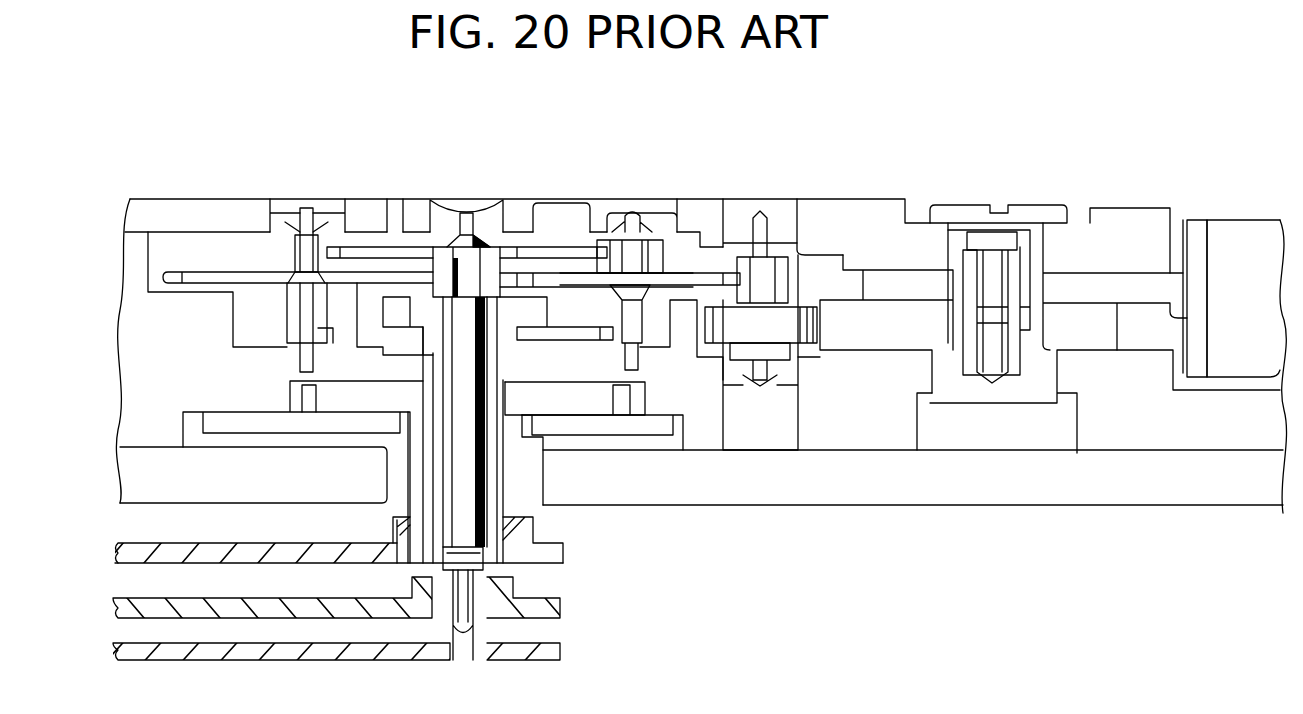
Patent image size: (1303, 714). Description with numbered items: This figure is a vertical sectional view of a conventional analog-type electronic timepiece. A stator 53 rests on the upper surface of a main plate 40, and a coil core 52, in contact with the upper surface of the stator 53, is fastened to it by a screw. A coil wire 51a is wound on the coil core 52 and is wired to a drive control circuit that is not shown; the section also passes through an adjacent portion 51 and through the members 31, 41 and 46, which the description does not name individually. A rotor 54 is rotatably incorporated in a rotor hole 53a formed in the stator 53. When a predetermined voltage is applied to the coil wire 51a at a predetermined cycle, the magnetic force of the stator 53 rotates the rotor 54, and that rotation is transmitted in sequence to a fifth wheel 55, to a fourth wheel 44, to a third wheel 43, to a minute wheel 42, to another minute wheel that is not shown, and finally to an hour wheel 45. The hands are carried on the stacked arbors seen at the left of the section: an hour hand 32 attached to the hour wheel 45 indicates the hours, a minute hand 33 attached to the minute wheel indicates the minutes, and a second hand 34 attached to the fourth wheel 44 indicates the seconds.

The base plate 31 is at (1124, 490).
The hour hand 32 is at (117, 552).
The minute hand 33 is at (117, 605).
The second hand 34 is at (115, 655).
The main plate 40 is at (893, 438).
The top plate 41 is at (240, 210).
The minute wheel 42 is at (350, 323).
The third wheel 43 is at (370, 277).
The fourth wheel 44 is at (510, 252).
The hour wheel 45 is at (597, 403).
The shield plate 46 is at (660, 427).
The side plate 51 is at (1218, 228).
The coil wire 51a is at (1250, 237).
The coil core 52 is at (1077, 287).
The stator 53 is at (897, 313).
The rotor hole 53a is at (838, 332).
The rotor 54 is at (803, 305).
The fifth wheel 55 is at (693, 277).